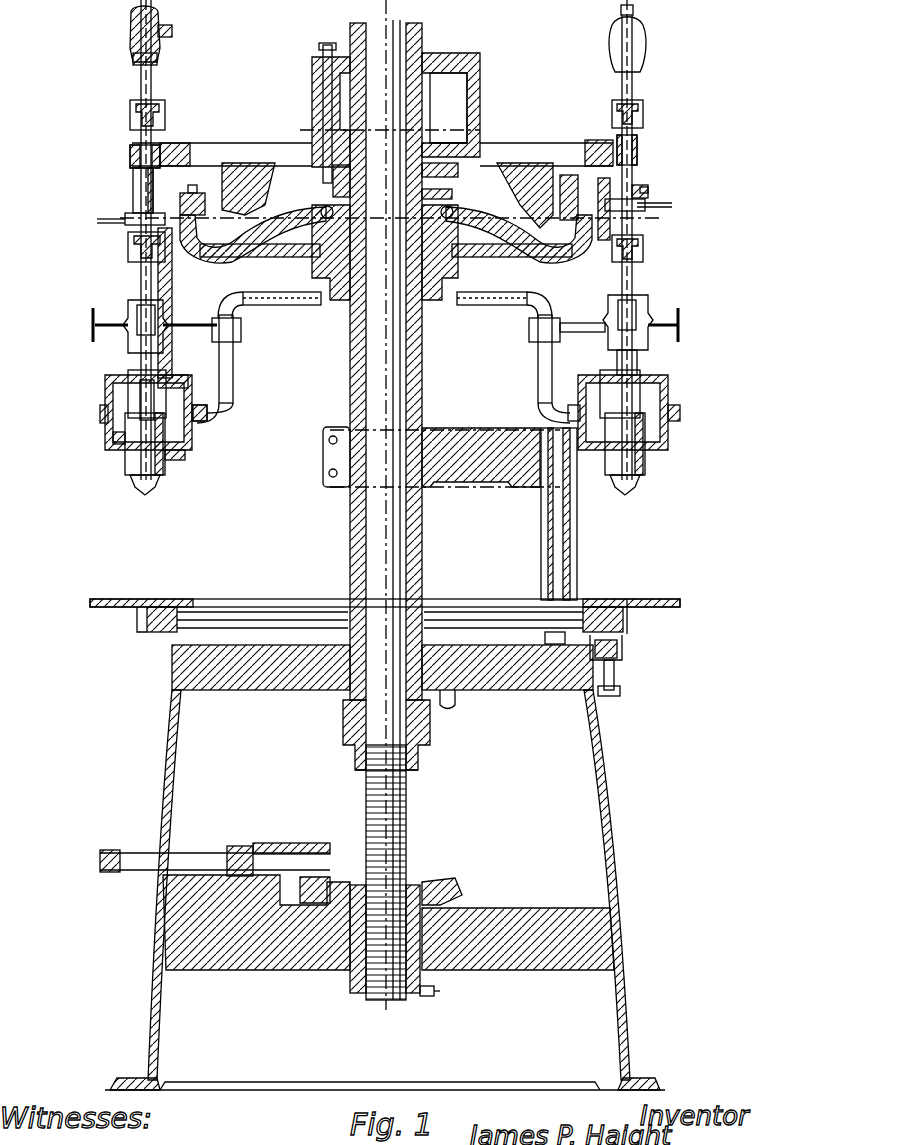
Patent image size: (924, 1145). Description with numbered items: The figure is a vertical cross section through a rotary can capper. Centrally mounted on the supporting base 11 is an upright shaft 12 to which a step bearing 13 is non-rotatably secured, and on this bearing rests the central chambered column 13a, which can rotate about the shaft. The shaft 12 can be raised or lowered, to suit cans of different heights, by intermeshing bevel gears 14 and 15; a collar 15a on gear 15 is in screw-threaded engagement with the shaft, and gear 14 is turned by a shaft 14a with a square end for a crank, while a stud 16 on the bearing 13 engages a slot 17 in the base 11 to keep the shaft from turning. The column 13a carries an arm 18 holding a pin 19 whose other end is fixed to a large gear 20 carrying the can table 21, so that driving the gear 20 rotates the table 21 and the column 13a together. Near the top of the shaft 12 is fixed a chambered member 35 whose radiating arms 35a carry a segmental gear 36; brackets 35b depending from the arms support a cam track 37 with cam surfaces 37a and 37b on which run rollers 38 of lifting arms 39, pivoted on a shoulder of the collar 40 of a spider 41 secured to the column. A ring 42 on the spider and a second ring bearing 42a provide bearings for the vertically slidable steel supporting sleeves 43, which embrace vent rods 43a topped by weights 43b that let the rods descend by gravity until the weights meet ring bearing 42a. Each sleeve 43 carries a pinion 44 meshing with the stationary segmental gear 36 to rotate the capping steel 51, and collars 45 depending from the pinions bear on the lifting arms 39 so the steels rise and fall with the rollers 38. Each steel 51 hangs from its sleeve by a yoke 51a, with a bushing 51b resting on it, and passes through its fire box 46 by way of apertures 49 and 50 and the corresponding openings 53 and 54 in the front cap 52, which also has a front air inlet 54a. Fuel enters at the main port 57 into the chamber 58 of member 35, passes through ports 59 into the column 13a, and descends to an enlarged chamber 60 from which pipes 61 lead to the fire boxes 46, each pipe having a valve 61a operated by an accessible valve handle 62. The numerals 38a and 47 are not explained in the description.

The supporting base 11 is at (608, 822).
The upright shaft 12 is at (408, 822).
The step bearing 13 is at (437, 716).
The central chambered column 13a is at (423, 396).
The bevel gear 14 is at (300, 843).
The shaft 14a is at (128, 850).
The bevel gear 15 is at (450, 882).
The collar 15a is at (422, 960).
The stud 16 is at (418, 745).
The slot 17 is at (408, 780).
The arm 18 is at (500, 488).
The pin 19 is at (560, 538).
The large gear 20 is at (137, 623).
The table 21 is at (110, 599).
The chambered member 35 is at (480, 60).
The radiating arms 35a is at (230, 150).
The brackets 35b is at (258, 180).
The segmental gear 36 is at (176, 143).
The cam track 37 is at (192, 188).
The cam surface 37a is at (250, 238).
The cam surface 37b is at (478, 205).
The rollers 38 is at (568, 180).
The nozzle tip 38a is at (158, 484).
The lifting arms 39 is at (210, 262).
The collar 40 is at (318, 262).
The spider 41 is at (505, 250).
The ring 42 is at (645, 246).
The ring bearing 42a is at (132, 112).
The steel supporting sleeves 43 is at (130, 272).
The vent rods 43a is at (130, 60).
The weights 43b is at (160, 20).
The pinion 44 is at (130, 156).
The collars 45 is at (133, 182).
The fire box 46 is at (200, 440).
The vertical pipe 47 is at (600, 282).
The aperture 49 is at (180, 380).
The aperture 50 is at (176, 460).
The capping steels 51 is at (128, 475).
The yokes 51a is at (135, 303).
The bushings 51b is at (138, 395).
The front caps 52 is at (105, 402).
The upper opening 53 is at (135, 398).
The lower opening 54 is at (118, 450).
The front air inlets 54a is at (100, 420).
The main port 57 is at (425, 53).
The chamber 58 is at (470, 96).
The ports 59 is at (470, 125).
The enlarged chamber 60 is at (440, 268).
The pipes 61 is at (290, 308).
The valve 61a is at (236, 337).
The valve handle 62 is at (92, 318).